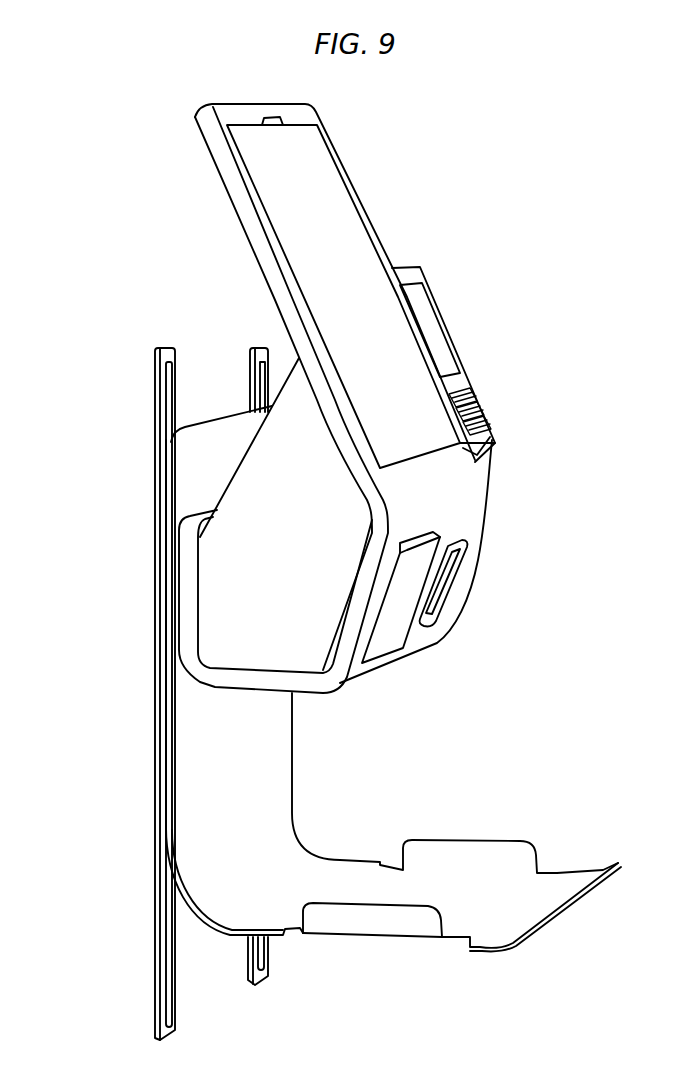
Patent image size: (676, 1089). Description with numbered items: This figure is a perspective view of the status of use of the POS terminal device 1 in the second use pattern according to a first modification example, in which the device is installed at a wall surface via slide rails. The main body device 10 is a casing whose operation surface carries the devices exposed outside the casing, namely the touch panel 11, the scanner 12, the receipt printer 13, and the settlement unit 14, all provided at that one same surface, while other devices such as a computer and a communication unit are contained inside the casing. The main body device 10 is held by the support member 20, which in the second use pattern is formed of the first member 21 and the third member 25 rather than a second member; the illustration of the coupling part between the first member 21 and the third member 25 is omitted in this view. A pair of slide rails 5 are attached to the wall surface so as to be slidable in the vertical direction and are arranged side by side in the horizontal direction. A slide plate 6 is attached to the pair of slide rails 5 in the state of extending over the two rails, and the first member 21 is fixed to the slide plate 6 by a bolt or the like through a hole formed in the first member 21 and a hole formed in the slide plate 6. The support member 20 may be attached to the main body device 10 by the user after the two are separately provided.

The POS terminal device 1 is at (170, 238).
The main body device 10 is at (462, 211).
The touch panel 11 is at (337, 188).
The scanner 12 is at (447, 576).
The receipt printer 13 is at (388, 636).
The settlement unit 14 is at (463, 378).
The support member 20 is at (377, 794).
The first member 21 is at (233, 430).
The third member 25 is at (497, 925).
The slide rails 5 is at (158, 357).
The slide plate 6 is at (160, 598).